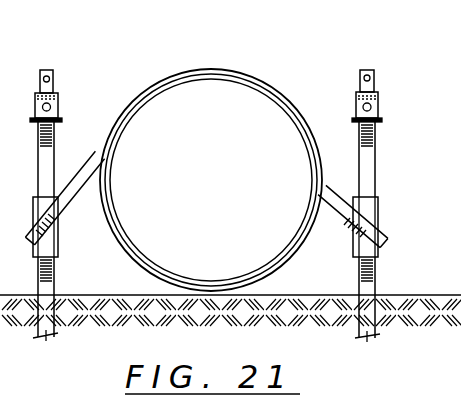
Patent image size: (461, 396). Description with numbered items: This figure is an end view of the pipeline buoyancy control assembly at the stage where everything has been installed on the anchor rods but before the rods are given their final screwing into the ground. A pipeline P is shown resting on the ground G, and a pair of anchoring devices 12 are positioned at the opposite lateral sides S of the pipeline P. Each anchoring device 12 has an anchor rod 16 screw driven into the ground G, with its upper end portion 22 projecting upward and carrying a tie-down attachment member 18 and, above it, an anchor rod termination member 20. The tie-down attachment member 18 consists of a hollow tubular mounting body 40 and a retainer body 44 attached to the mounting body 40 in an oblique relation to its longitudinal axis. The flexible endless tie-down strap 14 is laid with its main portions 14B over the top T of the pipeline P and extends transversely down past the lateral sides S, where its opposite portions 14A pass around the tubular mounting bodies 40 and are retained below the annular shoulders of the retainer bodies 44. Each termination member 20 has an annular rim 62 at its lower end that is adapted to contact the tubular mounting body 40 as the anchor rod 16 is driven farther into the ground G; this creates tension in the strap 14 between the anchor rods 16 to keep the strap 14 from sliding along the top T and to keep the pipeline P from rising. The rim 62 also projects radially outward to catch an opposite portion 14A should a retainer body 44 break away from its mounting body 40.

The anchoring device 12 is at (44, 66).
The endless tie-down strap 14 is at (264, 76).
The opposite portions of the endless strap 14A is at (62, 192).
The main portions of the endless strap 14B is at (168, 76).
The anchor rod 16 is at (38, 277).
The tie-down attachment member 18 is at (26, 242).
The anchor rod termination member 20 is at (58, 100).
The upper end portion of the anchor rod 22 is at (38, 150).
The tubular mounting body 40 is at (58, 250).
The retainer body 44 is at (60, 214).
The annular rim 62 is at (32, 124).
The top of the pipeline T is at (208, 70).
The lateral sides of the pipeline S is at (100, 174).
The pipeline P is at (120, 252).
The ground G is at (304, 296).